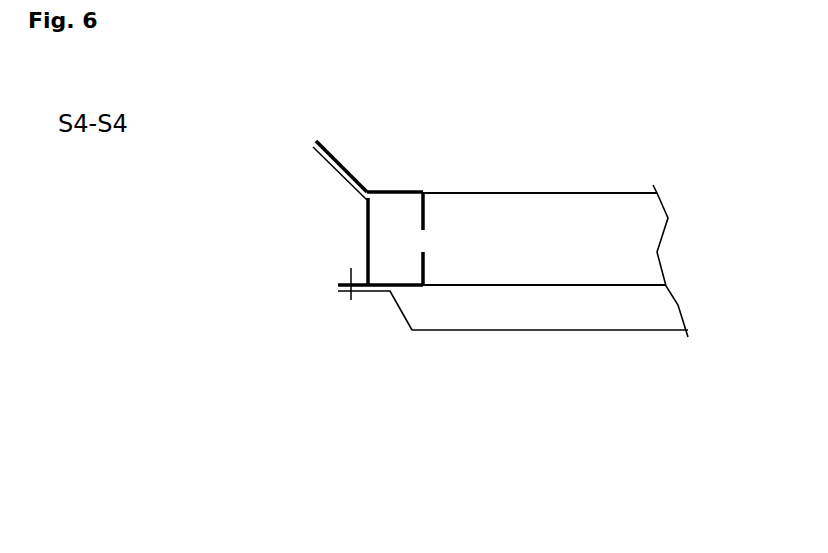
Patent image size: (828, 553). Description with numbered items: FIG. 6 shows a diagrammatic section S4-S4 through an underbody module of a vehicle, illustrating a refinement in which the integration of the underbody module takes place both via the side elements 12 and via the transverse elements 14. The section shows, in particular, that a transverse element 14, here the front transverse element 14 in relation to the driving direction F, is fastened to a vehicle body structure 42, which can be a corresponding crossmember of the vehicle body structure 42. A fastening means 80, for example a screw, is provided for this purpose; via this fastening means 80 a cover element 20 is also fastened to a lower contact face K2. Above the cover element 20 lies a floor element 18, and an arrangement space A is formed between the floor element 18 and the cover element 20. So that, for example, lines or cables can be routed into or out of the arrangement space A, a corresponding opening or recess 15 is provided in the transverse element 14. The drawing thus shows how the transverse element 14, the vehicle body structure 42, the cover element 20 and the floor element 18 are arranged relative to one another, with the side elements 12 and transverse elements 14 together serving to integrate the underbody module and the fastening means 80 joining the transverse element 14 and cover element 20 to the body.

The side element 12 is at (606, 210).
The floor element 18 is at (558, 192).
The opening or recess 15 is at (433, 241).
The vehicle body structure 42 is at (368, 222).
The transverse element 14 is at (328, 152).
The lower contact face K2 is at (558, 285).
The fastening means 80 is at (345, 304).
The cover element 20 is at (590, 331).
The arrangement space A is at (494, 307).
The driving direction F is at (430, 129).